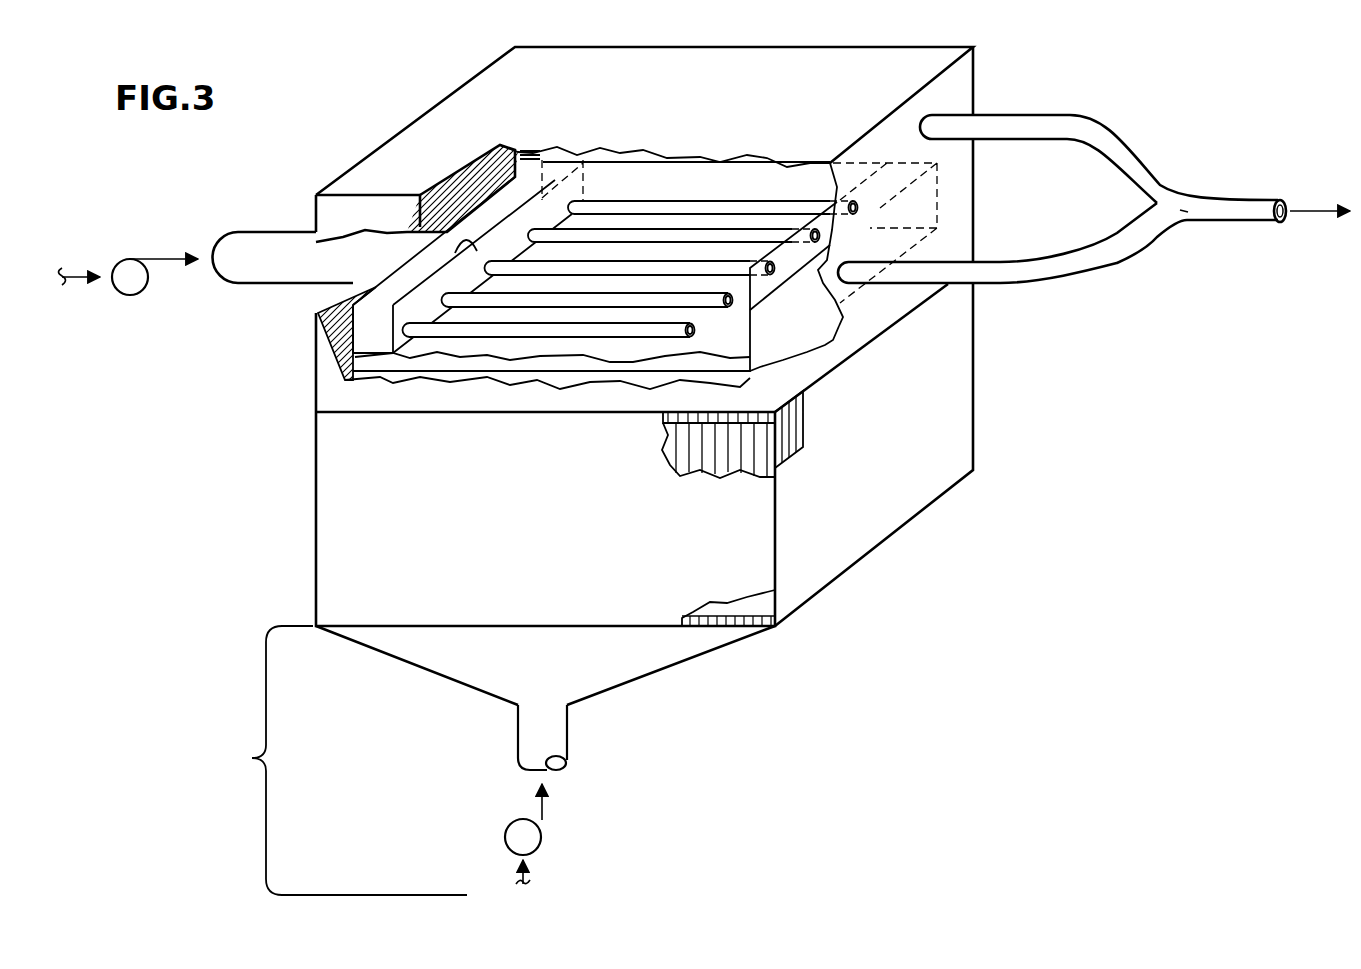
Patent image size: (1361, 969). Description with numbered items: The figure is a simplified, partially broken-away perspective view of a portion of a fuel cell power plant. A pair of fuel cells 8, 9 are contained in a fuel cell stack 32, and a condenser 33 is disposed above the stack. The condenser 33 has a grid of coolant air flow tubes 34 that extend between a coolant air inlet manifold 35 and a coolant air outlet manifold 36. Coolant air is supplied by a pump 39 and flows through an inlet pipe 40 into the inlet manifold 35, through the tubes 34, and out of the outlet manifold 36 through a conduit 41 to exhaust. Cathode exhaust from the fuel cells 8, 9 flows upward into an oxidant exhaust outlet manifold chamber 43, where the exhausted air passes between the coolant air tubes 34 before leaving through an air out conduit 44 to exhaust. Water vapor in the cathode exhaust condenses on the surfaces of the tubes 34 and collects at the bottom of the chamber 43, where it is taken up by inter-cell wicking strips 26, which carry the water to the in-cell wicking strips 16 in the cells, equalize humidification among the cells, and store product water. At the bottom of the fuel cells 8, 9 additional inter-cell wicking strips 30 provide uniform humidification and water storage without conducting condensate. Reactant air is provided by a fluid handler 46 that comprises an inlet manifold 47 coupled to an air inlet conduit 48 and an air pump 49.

The condenser 33 is at (914, 60).
The fuel cell stack 32 is at (302, 533).
The coolant air flow tubes 34 is at (668, 268).
The coolant air inlet manifold 35 is at (345, 367).
The coolant air outlet manifold 36 is at (791, 271).
The pump 39 is at (150, 273).
The inlet pipe 40 is at (272, 238).
The conduit 41 is at (1037, 267).
The oxidant exhaust outlet manifold chamber 43 is at (483, 345).
The air out conduit 44 is at (1122, 157).
The inter-cell wicking strips 26 is at (707, 417).
The in-cell wicking strip 16 is at (707, 443).
The fuel cell 9 is at (792, 430).
The fuel cell 8 is at (778, 440).
The inter-cell wicking strips 30 is at (748, 630).
The fluid handler 46 is at (340, 760).
The inlet manifold 47 is at (597, 683).
The air inlet conduit 48 is at (570, 723).
The air pump 49 is at (510, 818).